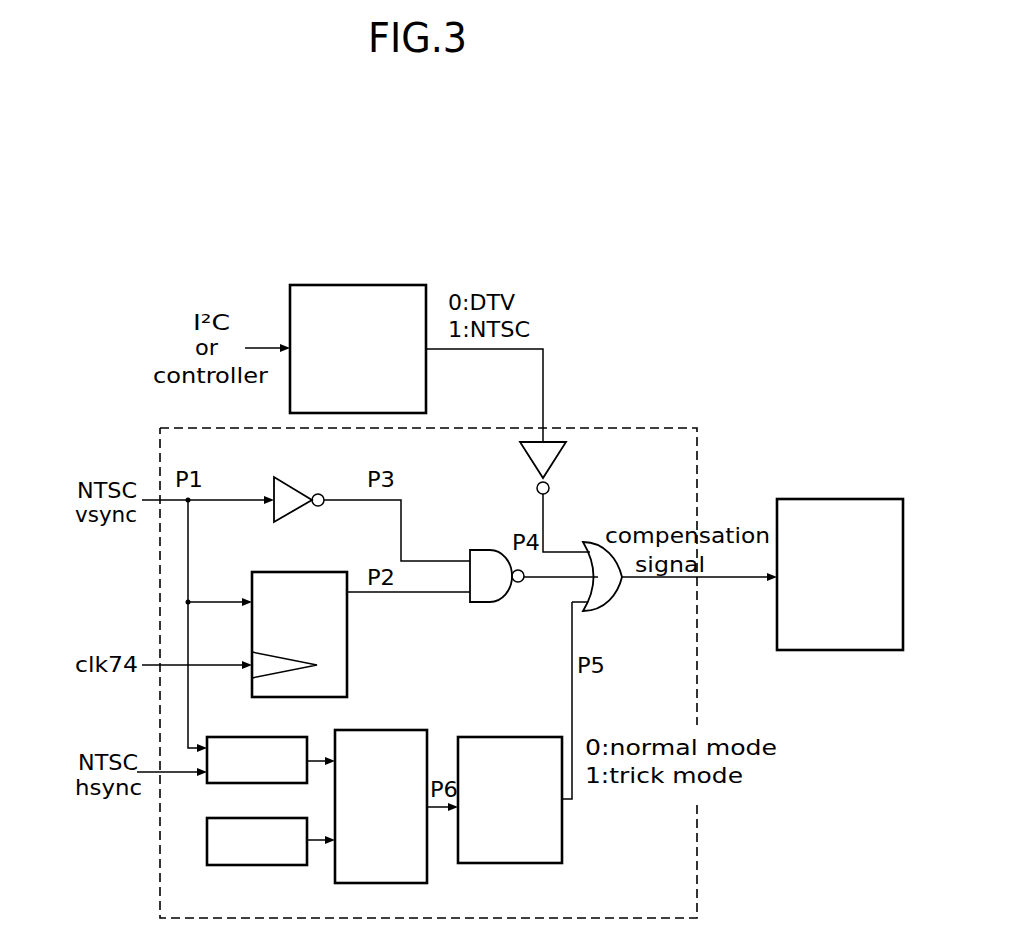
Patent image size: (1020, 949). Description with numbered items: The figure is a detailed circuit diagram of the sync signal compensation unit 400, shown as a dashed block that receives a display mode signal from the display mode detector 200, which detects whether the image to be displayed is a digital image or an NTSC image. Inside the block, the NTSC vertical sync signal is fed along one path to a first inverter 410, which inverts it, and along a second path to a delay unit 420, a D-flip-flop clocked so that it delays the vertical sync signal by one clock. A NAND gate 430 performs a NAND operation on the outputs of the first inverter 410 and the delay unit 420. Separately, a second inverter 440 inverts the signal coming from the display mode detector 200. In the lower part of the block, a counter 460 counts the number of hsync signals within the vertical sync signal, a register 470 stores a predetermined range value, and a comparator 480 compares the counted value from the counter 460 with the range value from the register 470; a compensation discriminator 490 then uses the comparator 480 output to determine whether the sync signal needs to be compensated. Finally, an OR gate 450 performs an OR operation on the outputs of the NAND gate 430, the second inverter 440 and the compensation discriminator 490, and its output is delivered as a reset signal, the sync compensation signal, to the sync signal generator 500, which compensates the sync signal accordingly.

The display mode detector 200 is at (366, 285).
The sync signal compensation unit 400 is at (698, 855).
The first inverter 410 is at (284, 477).
The delay unit 420 is at (347, 622).
The NAND gate 430 is at (476, 548).
The second inverter 440 is at (553, 442).
The OR gate 450 is at (597, 541).
The counter 460 is at (215, 783).
The register 470 is at (292, 865).
The comparator 480 is at (383, 730).
The compensation discriminator 490 is at (505, 737).
The sync signal generator 500 is at (841, 499).